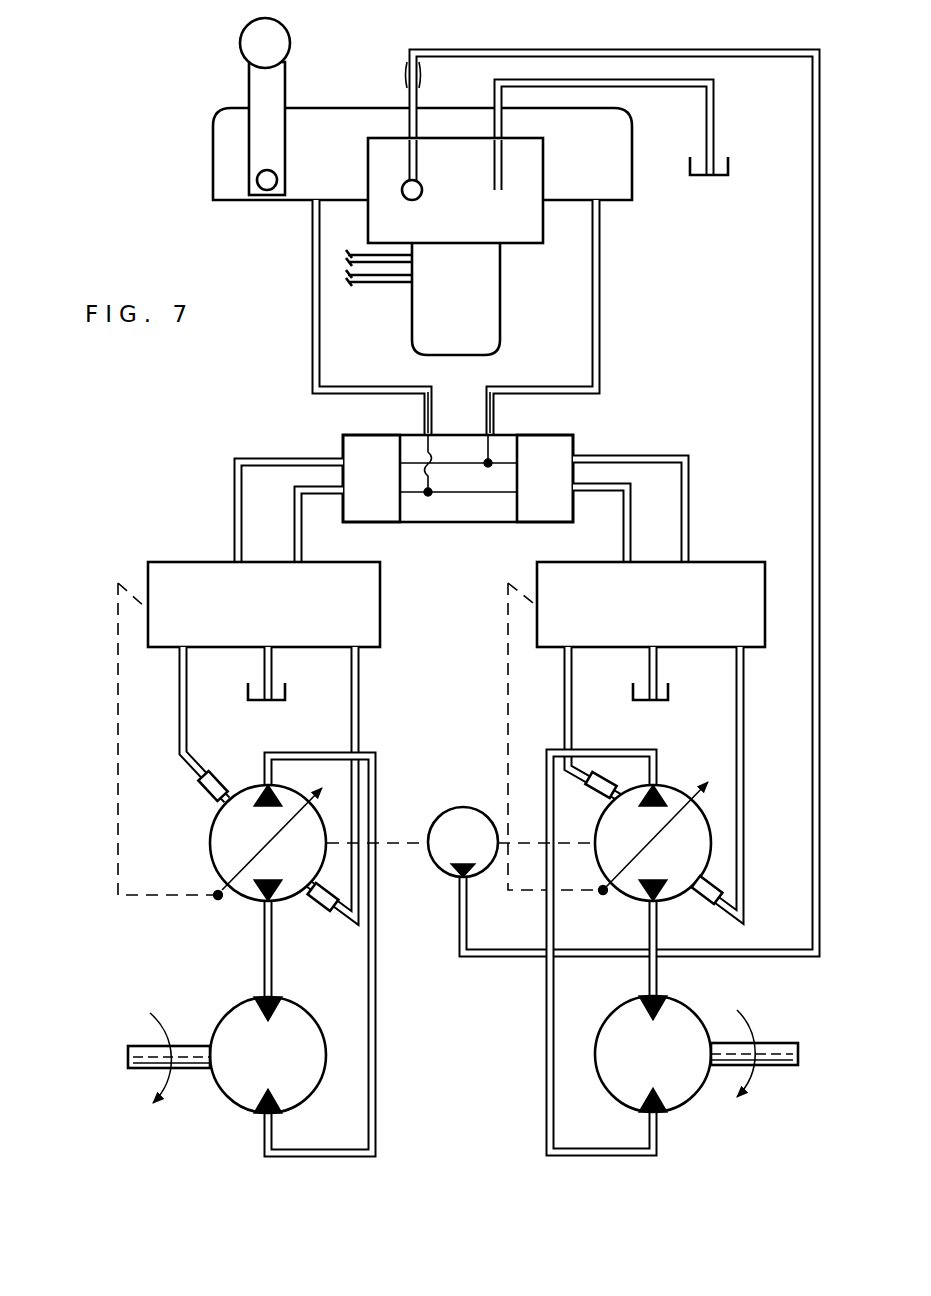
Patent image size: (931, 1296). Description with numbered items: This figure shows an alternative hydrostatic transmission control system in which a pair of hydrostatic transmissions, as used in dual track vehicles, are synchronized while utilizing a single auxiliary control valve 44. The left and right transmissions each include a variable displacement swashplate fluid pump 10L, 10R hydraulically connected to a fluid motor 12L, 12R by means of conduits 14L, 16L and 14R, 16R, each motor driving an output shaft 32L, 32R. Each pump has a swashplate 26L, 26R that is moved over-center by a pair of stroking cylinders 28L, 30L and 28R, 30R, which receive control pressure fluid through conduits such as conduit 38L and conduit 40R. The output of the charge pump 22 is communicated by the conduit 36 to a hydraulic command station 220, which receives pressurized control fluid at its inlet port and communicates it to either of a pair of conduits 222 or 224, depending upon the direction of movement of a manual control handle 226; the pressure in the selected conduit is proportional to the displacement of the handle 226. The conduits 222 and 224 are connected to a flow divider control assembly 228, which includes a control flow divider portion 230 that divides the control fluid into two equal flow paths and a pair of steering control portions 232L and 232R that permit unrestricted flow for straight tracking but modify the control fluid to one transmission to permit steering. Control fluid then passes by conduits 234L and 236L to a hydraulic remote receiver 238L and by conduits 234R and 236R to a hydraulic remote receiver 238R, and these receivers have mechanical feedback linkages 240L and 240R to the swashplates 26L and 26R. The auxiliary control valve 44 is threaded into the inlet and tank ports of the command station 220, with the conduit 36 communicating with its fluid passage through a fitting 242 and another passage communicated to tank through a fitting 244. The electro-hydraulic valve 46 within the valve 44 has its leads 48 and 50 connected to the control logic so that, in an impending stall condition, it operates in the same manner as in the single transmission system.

The hydraulic command station 220 is at (349, 90).
The manual control handle 226 is at (247, 82).
The conduit 36 is at (478, 56).
The auxiliary control valve 44 is at (549, 169).
The fitting 242 is at (420, 199).
The fitting 244 is at (506, 199).
The electro-hydraulic valve 46 is at (520, 306).
The lead 48 is at (357, 252).
The lead 50 is at (392, 283).
The conduit 222 is at (312, 250).
The conduit 224 is at (600, 248).
The control flow divider portion 230 is at (457, 428).
The flow divider control assembly 228 is at (463, 508).
The steering control portion 232L is at (365, 433).
The steering control portion 232R is at (560, 433).
The conduit 234L is at (234, 497).
The conduit 234R is at (690, 492).
The conduit 236L is at (303, 545).
The conduit 236R is at (621, 546).
The hydraulic remote receiver 238L is at (188, 556).
The hydraulic remote receiver 238R is at (706, 553).
The mechanical feedback linkage 240L is at (122, 886).
The mechanical feedback linkage 240R is at (507, 677).
The conduit 38L is at (182, 672).
The conduit 40R is at (358, 676).
The stroking cylinder 28L is at (220, 779).
The stroking cylinder 28R is at (595, 792).
The stroking cylinder 30L is at (313, 906).
The stroking cylinder 30R is at (702, 905).
The variable displacement fluid pump 10L is at (230, 865).
The variable displacement fluid pump 10R is at (645, 832).
The swashplate 26L is at (218, 898).
The swashplate 26R is at (602, 900).
The charge pump 22 is at (462, 806).
The conduit 14L is at (273, 970).
The conduit 14R is at (658, 970).
The conduit 16L is at (378, 1000).
The conduit 16R is at (549, 1026).
The fluid motor 12L is at (230, 1117).
The fluid motor 12R is at (690, 1115).
The output shaft 32L is at (190, 1045).
The output shaft 32R is at (778, 1042).